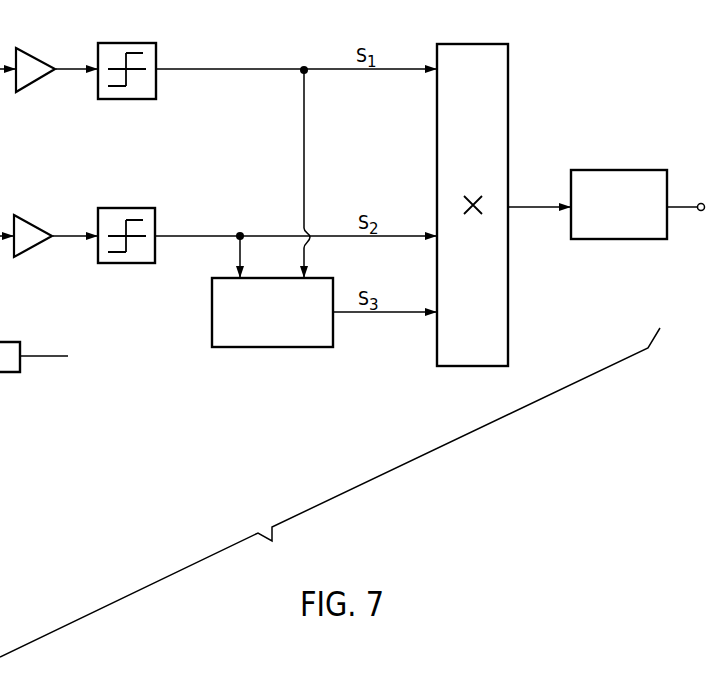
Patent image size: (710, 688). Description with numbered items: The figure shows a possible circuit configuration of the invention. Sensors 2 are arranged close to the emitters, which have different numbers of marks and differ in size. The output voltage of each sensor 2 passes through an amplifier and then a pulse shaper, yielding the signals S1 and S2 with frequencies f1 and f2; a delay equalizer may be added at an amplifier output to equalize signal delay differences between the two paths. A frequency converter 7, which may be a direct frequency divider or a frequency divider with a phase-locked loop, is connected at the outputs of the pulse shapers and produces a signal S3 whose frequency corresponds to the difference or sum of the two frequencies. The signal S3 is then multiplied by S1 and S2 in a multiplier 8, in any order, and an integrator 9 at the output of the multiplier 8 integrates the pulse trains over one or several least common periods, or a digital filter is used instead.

The sensor 2 is at (6, 362).
The frequency converter 7 is at (275, 338).
The multiplier 8 is at (470, 58).
The integrator 9 is at (634, 180).